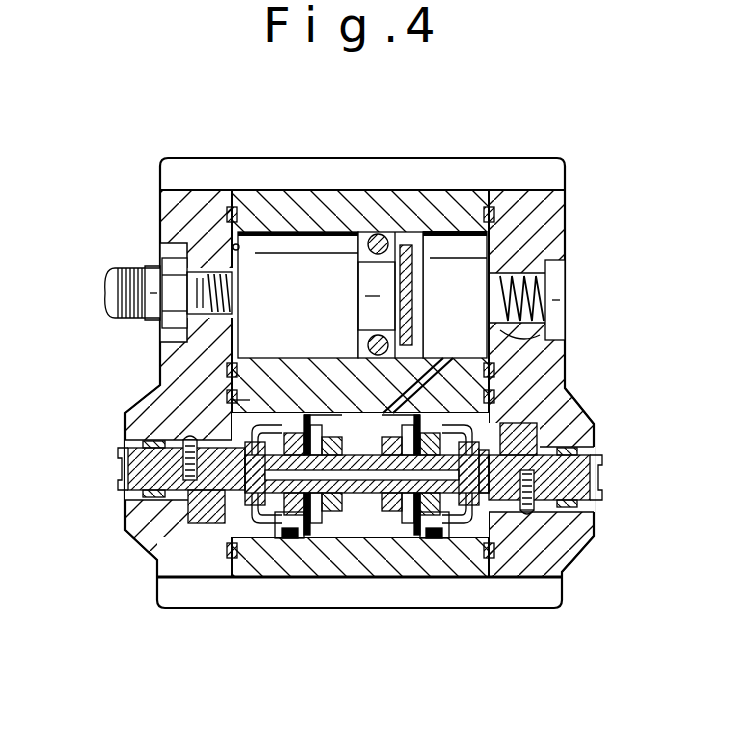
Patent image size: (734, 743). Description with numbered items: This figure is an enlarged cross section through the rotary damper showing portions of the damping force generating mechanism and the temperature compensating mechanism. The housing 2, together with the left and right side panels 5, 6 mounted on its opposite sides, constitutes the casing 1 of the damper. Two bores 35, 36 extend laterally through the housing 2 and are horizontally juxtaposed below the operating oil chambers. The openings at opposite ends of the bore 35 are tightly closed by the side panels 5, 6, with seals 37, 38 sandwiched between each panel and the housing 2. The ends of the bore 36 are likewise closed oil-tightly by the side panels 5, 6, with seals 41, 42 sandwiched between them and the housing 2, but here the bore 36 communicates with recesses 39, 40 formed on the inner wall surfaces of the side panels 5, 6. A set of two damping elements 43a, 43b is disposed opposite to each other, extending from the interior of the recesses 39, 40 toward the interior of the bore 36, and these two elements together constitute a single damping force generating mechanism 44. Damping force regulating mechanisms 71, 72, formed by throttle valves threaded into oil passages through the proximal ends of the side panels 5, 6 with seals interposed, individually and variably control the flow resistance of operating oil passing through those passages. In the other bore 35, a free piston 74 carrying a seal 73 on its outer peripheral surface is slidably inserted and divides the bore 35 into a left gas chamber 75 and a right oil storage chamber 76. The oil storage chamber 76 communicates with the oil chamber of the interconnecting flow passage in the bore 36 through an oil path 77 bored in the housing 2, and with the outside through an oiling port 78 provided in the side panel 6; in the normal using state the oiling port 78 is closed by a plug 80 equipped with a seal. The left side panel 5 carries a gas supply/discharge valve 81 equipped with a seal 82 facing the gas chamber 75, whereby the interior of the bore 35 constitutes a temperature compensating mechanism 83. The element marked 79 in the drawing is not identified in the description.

The casing 1 is at (547, 162).
The housing 2 is at (268, 200).
The left side panel 5 is at (175, 198).
The right side panel 6 is at (547, 203).
The bore 35 is at (442, 233).
The bore 36 is at (360, 527).
The seal 37 is at (233, 208).
The seal 38 is at (495, 207).
The recess 39 is at (165, 543).
The recess 40 is at (560, 573).
The seal 41 is at (228, 398).
The seal 42 is at (466, 527).
The damping element 43a is at (293, 538).
The damping element 43b is at (426, 538).
The damping force generating mechanism 44 is at (442, 663).
The damping force regulating mechanism 71 is at (118, 460).
The damping force regulating mechanism 72 is at (603, 466).
The seal 73 is at (375, 228).
The free piston 74 is at (358, 345).
The gas chamber 75 is at (320, 299).
The oil storage chamber 76 is at (472, 299).
The oil path 77 is at (440, 372).
The oiling port 78 is at (505, 330).
The spring 79 is at (541, 270).
The plug 80 is at (557, 287).
The gas supply/discharge valve 81 is at (103, 292).
The seal 82 is at (160, 330).
The temperature compensating mechanism 83 is at (228, 243).